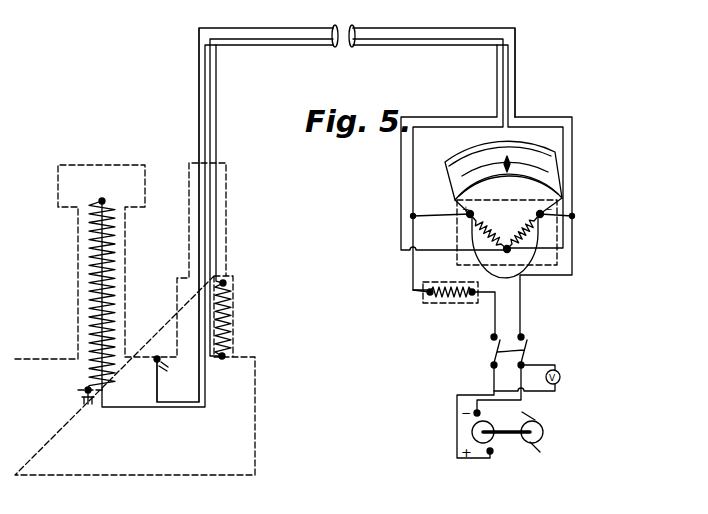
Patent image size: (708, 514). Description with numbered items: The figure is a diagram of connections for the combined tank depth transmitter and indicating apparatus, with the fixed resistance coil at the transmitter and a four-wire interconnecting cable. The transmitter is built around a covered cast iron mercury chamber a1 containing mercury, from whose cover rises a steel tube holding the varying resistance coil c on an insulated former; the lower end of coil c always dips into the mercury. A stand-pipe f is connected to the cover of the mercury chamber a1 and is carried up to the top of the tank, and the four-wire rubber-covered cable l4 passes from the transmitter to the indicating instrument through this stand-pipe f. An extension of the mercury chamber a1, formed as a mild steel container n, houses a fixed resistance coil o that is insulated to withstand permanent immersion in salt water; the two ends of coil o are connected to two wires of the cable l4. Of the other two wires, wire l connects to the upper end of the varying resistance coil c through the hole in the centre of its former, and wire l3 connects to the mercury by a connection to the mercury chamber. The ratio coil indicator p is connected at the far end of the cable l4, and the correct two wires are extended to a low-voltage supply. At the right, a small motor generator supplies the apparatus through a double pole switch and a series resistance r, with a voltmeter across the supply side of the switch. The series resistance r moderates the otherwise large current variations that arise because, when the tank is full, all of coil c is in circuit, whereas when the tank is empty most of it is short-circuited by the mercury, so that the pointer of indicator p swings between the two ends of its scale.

The four-wire rubber-covered cable l4 is at (199, 107).
The stand-pipe f is at (227, 186).
The varying resistance coil c is at (116, 278).
The mild steel container n is at (234, 291).
The fixed resistance coil o is at (233, 327).
The cable wire to mercury l3 is at (160, 383).
The mercury chamber a1 is at (256, 396).
The cable wire to varying resistance coil l is at (143, 410).
The series resistance r is at (440, 300).
The ratio coil indicator p is at (542, 181).